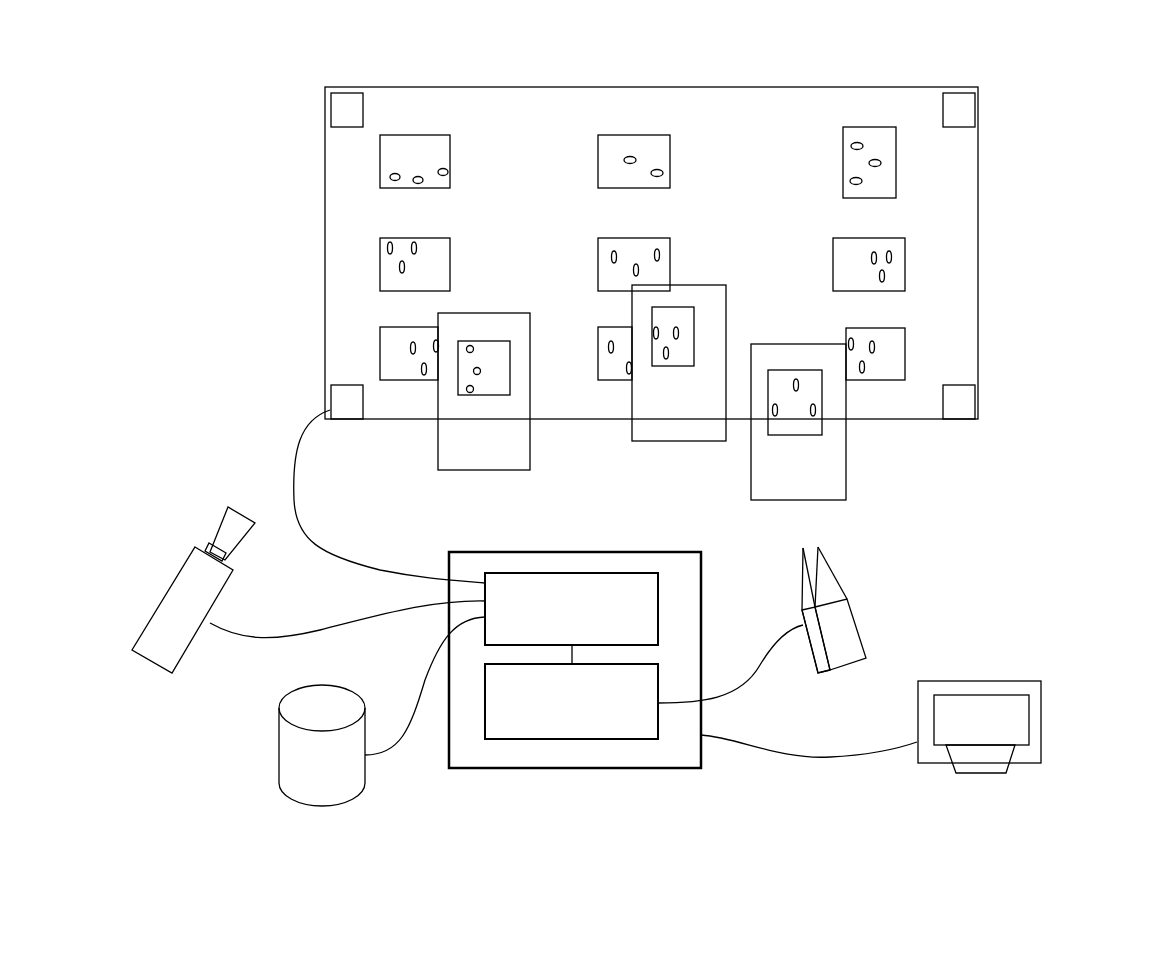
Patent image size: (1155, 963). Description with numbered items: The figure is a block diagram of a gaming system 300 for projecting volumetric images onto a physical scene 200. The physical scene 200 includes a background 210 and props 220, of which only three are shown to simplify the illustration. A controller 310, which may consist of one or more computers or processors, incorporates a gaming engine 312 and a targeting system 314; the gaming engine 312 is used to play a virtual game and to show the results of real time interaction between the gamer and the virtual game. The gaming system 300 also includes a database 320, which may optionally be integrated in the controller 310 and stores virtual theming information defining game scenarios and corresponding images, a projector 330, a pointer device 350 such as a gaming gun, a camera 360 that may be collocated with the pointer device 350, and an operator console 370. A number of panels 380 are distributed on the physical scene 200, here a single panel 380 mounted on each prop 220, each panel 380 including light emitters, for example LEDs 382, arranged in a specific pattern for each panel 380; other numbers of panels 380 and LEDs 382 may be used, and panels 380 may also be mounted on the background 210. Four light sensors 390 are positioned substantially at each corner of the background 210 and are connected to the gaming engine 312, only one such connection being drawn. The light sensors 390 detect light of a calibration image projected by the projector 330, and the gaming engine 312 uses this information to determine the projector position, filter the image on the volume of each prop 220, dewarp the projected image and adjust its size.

The physical scene 200 is at (1017, 72).
The background 210 is at (978, 245).
The prop 220 is at (530, 435).
The gaming system 300 is at (175, 160).
The controller 310 is at (683, 552).
The gaming engine 312 is at (658, 600).
The targeting system 314 is at (658, 668).
The database 320 is at (279, 758).
The projector 330 is at (177, 582).
The pointer device 350 is at (852, 622).
The camera 360 is at (810, 652).
The operator console 370 is at (1041, 700).
The panel 380 is at (440, 138).
The LED 382 is at (668, 152).
The light sensor 390 is at (331, 113).